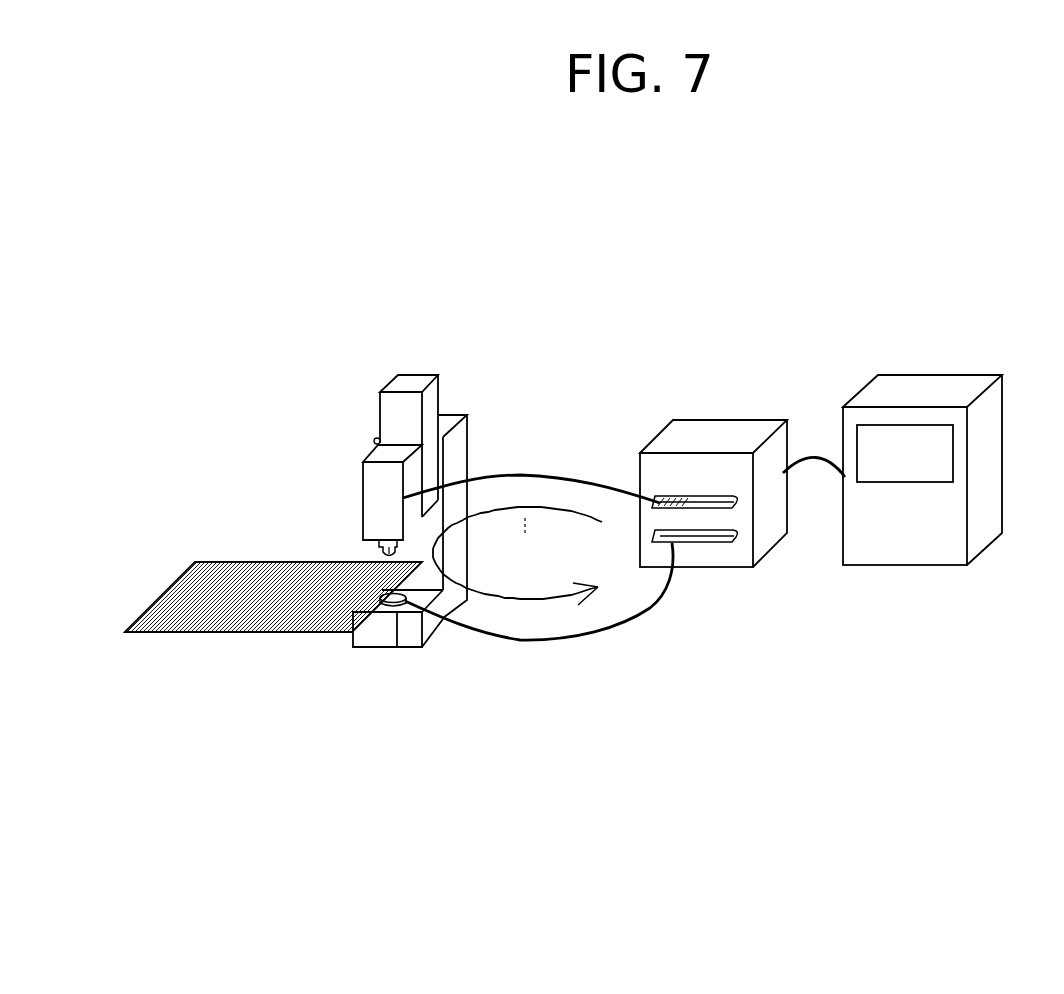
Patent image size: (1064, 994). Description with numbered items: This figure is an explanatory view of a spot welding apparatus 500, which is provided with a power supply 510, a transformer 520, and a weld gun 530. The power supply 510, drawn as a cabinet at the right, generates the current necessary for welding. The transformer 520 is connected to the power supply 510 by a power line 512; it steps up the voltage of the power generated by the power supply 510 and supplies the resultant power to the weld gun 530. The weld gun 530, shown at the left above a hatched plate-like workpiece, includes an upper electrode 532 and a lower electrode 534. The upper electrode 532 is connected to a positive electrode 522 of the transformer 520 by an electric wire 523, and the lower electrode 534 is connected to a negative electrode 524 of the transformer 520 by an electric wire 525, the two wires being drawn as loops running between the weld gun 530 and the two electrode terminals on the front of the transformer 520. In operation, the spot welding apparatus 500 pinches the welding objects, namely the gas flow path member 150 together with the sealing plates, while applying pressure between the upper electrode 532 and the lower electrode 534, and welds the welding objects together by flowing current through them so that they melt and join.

The gas flow path member 150 is at (202, 561).
The spot welding apparatus 500 is at (904, 303).
The power supply 510 is at (987, 372).
The power line 512 is at (820, 457).
The transformer 520 is at (760, 418).
The positive electrode 522 is at (700, 495).
The electric wire 523 is at (546, 474).
The negative electrode 524 is at (698, 544).
The electric wire 525 is at (556, 643).
The weld gun 530 is at (423, 373).
The upper electrode 532 is at (377, 548).
The lower electrode 534 is at (397, 647).